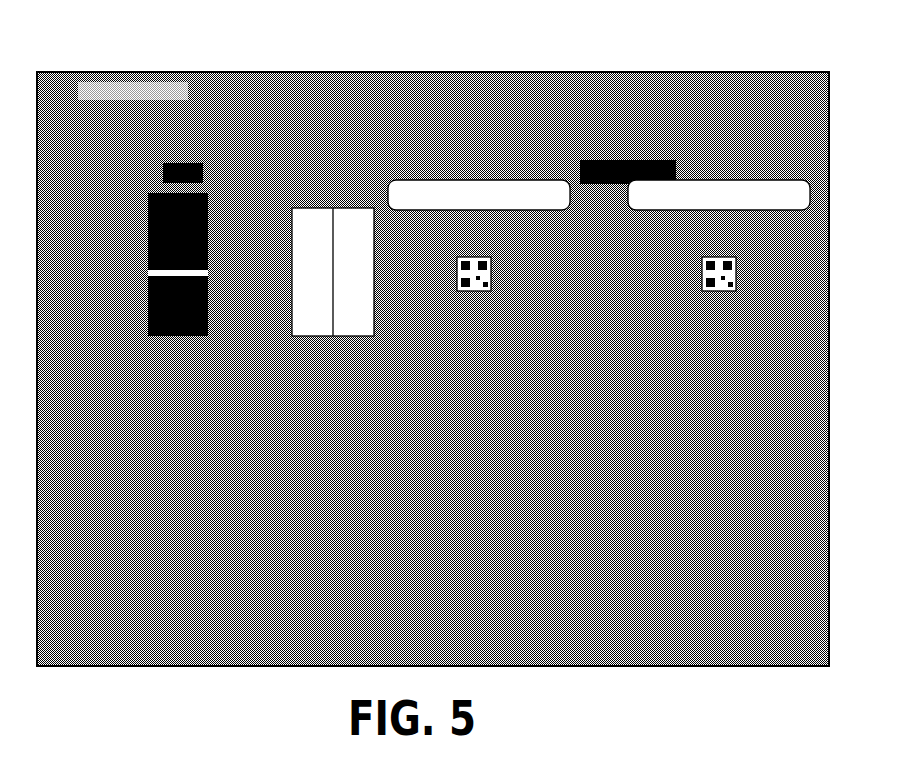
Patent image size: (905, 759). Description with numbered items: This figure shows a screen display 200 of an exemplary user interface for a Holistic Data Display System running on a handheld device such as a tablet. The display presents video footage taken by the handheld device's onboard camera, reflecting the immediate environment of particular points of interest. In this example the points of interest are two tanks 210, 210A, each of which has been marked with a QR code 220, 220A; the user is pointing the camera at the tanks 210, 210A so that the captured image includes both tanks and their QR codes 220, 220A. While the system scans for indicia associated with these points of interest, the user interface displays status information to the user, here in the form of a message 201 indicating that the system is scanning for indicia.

The display screen of augmented reality device 200 is at (505, 48).
The message 201 is at (136, 74).
The tank 210 is at (468, 172).
The tank 210A is at (698, 172).
The QR code 220 is at (484, 236).
The QR code 220A is at (713, 237).